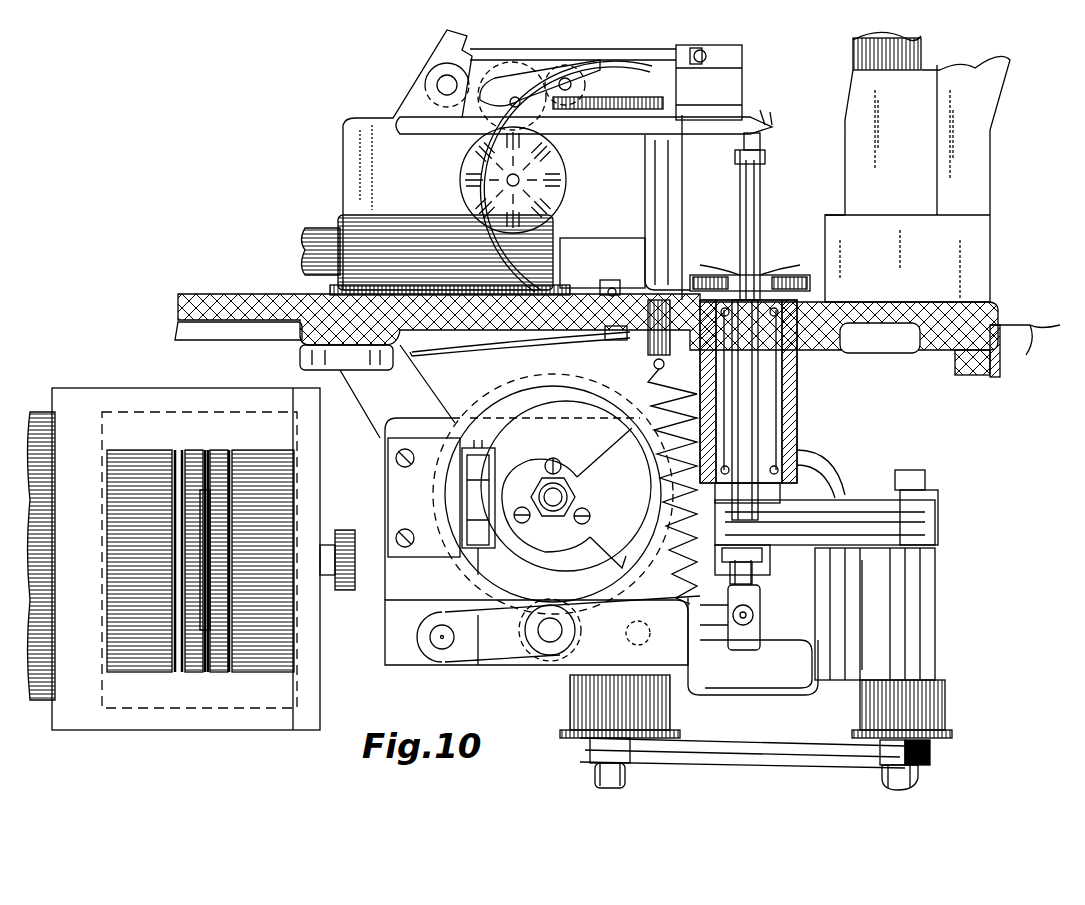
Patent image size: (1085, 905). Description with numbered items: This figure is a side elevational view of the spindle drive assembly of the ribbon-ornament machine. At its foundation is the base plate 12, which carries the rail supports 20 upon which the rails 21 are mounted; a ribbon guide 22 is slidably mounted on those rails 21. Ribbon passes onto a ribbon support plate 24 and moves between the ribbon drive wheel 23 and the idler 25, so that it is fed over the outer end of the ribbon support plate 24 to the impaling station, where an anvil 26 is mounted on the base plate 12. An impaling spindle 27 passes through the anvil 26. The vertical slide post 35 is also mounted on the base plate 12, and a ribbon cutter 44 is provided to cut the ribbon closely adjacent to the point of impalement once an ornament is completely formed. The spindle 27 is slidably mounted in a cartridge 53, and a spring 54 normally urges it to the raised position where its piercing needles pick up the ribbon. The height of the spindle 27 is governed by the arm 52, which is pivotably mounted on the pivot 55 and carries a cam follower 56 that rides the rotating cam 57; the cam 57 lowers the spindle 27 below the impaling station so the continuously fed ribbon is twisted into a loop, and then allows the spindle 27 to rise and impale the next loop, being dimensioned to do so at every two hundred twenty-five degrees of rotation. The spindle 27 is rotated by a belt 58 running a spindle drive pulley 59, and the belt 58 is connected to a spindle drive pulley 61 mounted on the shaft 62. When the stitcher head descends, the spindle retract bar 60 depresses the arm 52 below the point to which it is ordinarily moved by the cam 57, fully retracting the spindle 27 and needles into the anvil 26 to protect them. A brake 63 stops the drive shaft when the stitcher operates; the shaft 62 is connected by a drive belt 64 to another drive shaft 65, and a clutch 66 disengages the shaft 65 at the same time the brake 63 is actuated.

The base plate 12 is at (320, 295).
The rail supports 20 is at (607, 258).
The rails 21 is at (335, 245).
The ribbon guide 22 is at (350, 198).
The ribbon drive wheel 23 is at (567, 190).
The ribbon support plate 24 is at (658, 137).
The idler 25 is at (540, 62).
The anvil 26 is at (762, 226).
The impaling spindle 27 is at (758, 150).
The vertical slide post 35 is at (850, 64).
The ribbon cutter 44 is at (742, 48).
The arm 52 is at (712, 640).
The cartridge 53 is at (797, 381).
The spring 54 is at (662, 380).
The pivot 55 is at (442, 668).
The cam follower 56 is at (548, 655).
The cam 57 is at (530, 388).
The belt 58 is at (853, 530).
The spindle drive pulley 59 is at (772, 550).
The spindle retract bar 60 is at (763, 580).
The spindle drive pulley 61 is at (938, 548).
The shaft 62 is at (886, 785).
The brake 63 is at (946, 718).
The drive belt 64 is at (715, 762).
The drive shaft 65 is at (626, 786).
The clutch 66 is at (570, 712).